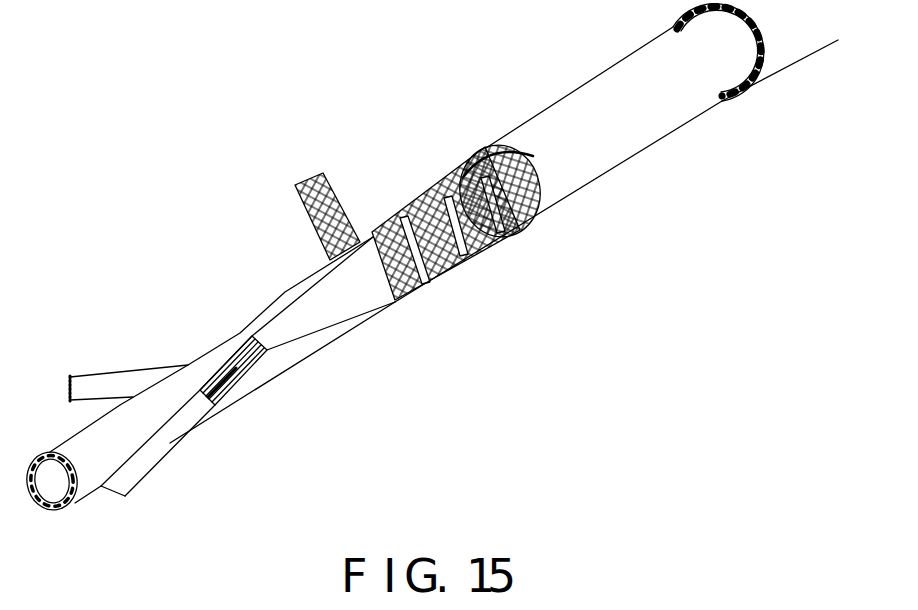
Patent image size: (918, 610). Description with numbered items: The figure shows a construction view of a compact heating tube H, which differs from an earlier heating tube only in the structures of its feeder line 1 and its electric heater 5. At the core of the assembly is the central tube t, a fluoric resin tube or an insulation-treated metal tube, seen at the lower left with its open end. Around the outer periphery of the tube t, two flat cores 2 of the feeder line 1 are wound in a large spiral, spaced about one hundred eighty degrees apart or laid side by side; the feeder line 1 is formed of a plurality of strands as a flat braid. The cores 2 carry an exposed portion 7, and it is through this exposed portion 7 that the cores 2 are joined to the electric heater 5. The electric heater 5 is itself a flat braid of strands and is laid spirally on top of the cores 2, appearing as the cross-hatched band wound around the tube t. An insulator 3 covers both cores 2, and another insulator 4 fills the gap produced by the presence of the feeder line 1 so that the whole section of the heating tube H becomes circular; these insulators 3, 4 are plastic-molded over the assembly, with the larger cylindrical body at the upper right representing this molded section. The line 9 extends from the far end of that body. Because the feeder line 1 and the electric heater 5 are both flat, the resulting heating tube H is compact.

The feeder line 1 is at (178, 327).
The flat cores 2 is at (71, 377).
The insulator 3 is at (127, 366).
The insulator 4 is at (567, 180).
The electric heater 5 is at (407, 298).
The exposed portion 7 is at (240, 363).
The lead line 9 is at (790, 53).
The heating tube H is at (470, 108).
The central tube t is at (87, 488).